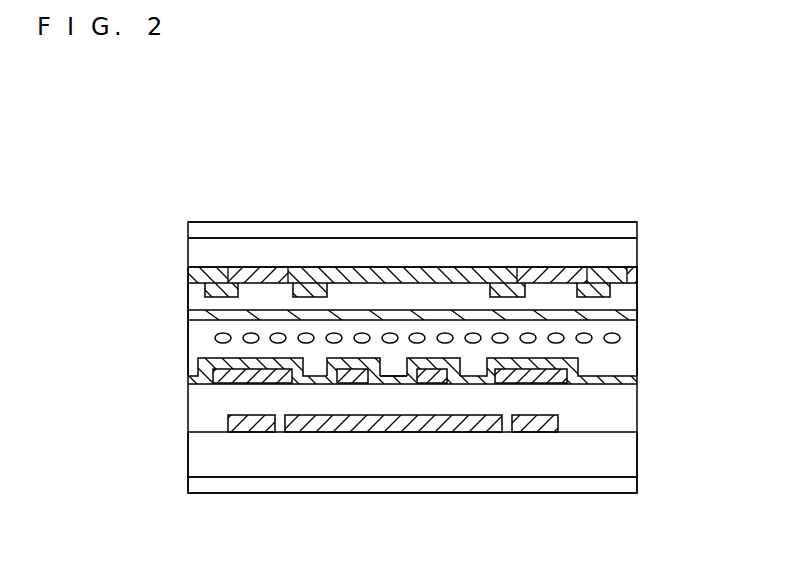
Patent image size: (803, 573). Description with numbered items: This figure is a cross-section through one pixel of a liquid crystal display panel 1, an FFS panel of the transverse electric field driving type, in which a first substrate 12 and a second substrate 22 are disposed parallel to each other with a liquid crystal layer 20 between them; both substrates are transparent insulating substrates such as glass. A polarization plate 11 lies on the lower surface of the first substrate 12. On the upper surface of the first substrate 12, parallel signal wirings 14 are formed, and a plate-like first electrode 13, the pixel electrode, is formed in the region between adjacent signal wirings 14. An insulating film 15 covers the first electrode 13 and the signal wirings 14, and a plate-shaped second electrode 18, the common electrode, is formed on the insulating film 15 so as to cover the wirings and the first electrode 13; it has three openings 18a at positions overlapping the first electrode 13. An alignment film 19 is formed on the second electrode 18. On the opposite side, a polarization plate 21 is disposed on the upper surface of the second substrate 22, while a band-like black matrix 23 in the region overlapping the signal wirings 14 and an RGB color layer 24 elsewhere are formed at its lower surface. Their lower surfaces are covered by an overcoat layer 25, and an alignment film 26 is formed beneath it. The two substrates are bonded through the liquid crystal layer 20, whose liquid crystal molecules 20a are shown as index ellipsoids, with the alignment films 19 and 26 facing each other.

The liquid crystal display panel 1 is at (102, 148).
The polarization plate 11 is at (627, 487).
The first substrate 12 is at (633, 449).
The first electrode 13 is at (458, 425).
The signal wiring 14 is at (548, 427).
The insulating film 15 is at (630, 397).
The second electrode 18 is at (358, 384).
The opening 18a is at (402, 384).
The alignment film 19 is at (198, 377).
The liquid crystal layer 20 is at (623, 353).
The liquid crystal molecules 20a is at (213, 340).
The polarization plate 21 is at (625, 230).
The second substrate 22 is at (633, 255).
The black matrix 23 is at (262, 277).
The color layer 24 is at (411, 270).
The overcoat layer 25 is at (198, 299).
The alignment film 26 is at (628, 313).